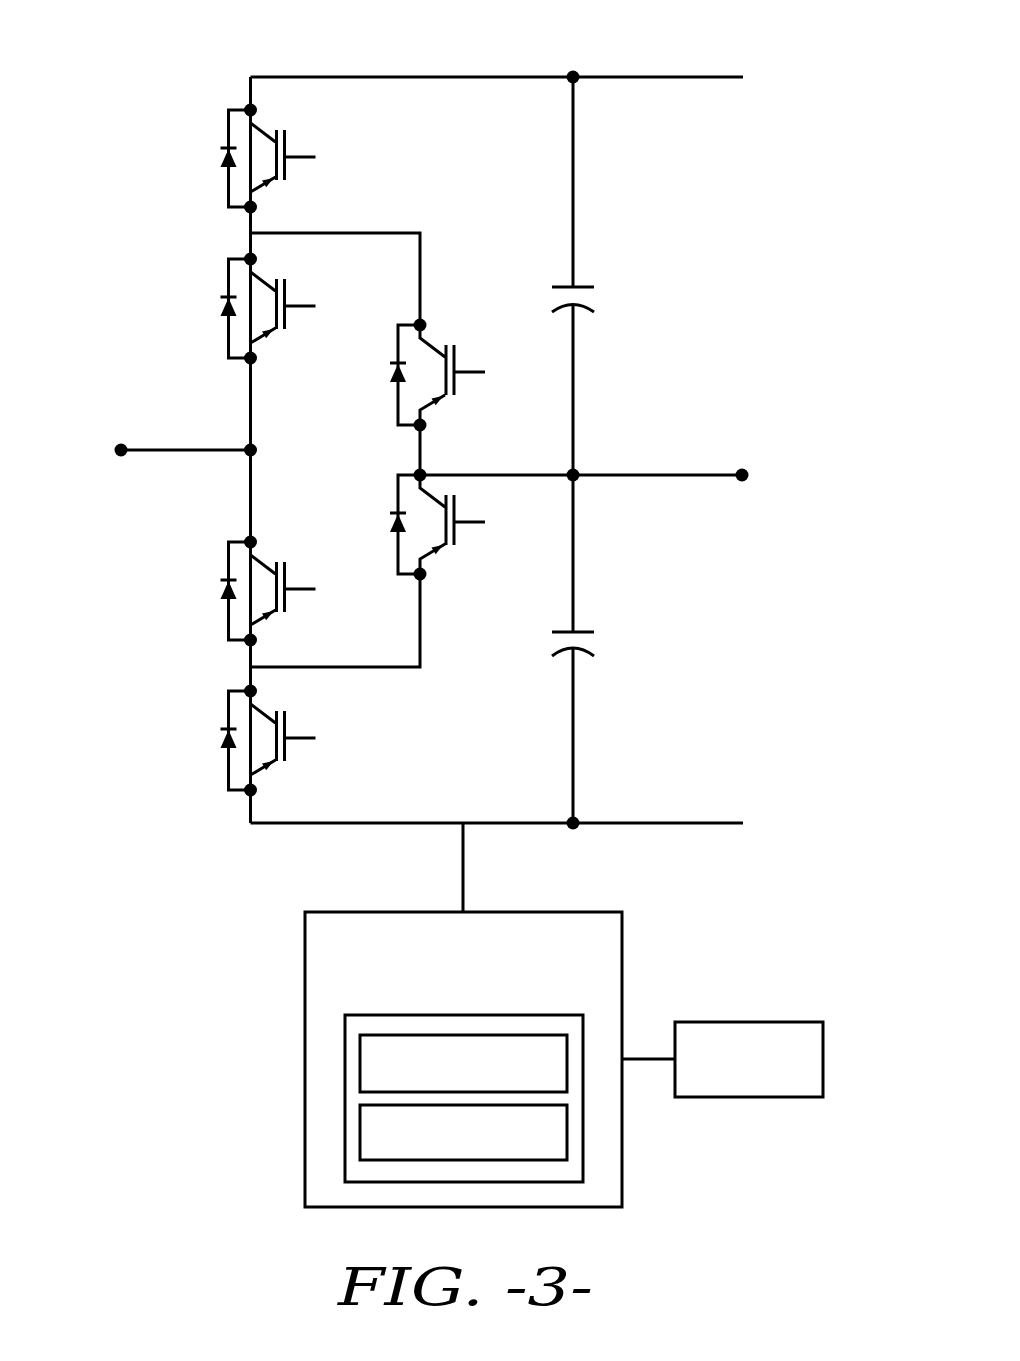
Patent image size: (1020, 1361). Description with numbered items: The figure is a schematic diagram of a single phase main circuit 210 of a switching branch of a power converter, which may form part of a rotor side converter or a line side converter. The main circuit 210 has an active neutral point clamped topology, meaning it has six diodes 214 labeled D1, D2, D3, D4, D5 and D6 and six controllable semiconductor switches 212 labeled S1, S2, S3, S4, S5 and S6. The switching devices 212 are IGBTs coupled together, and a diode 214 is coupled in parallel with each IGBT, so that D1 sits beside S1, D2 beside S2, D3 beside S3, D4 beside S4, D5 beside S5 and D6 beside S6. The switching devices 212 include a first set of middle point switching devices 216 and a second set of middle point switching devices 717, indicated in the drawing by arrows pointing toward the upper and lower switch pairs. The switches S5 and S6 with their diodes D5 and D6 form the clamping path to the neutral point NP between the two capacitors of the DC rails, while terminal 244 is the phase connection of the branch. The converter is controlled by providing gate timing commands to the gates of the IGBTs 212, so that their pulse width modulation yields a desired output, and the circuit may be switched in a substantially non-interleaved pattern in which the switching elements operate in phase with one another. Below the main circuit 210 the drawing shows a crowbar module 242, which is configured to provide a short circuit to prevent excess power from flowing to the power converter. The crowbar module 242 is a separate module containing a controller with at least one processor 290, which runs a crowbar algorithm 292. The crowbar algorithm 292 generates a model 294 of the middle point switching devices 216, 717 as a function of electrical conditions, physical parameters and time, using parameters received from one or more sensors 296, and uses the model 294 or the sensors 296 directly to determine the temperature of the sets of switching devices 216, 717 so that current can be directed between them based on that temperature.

The main circuit 210 is at (147, 97).
The switching devices 212 is at (374, 450).
The diodes 214 is at (212, 190).
The first set of middle point switching devices 216 is at (300, 293).
The lower switching devices 717 is at (298, 605).
The crowbar module 242 is at (362, 908).
The AC terminal 244 is at (149, 455).
The processor 290 is at (358, 1067).
The crowbar algorithm 292 is at (603, 965).
The model 294 is at (358, 1133).
The sensors 296 is at (777, 1073).
The neutral point NP is at (611, 480).
The diode D1 is at (215, 158).
The diode D2 is at (215, 308).
The diode D3 is at (215, 591).
The diode D4 is at (215, 740).
The diode D5 is at (385, 375).
The diode D6 is at (387, 524).
The controllable semiconductor switch S1 is at (289, 158).
The controllable semiconductor switch S2 is at (289, 308).
The controllable semiconductor switch S3 is at (289, 591).
The controllable semiconductor switch S4 is at (289, 740).
The controllable semiconductor switch S5 is at (459, 375).
The controllable semiconductor switch S6 is at (459, 524).